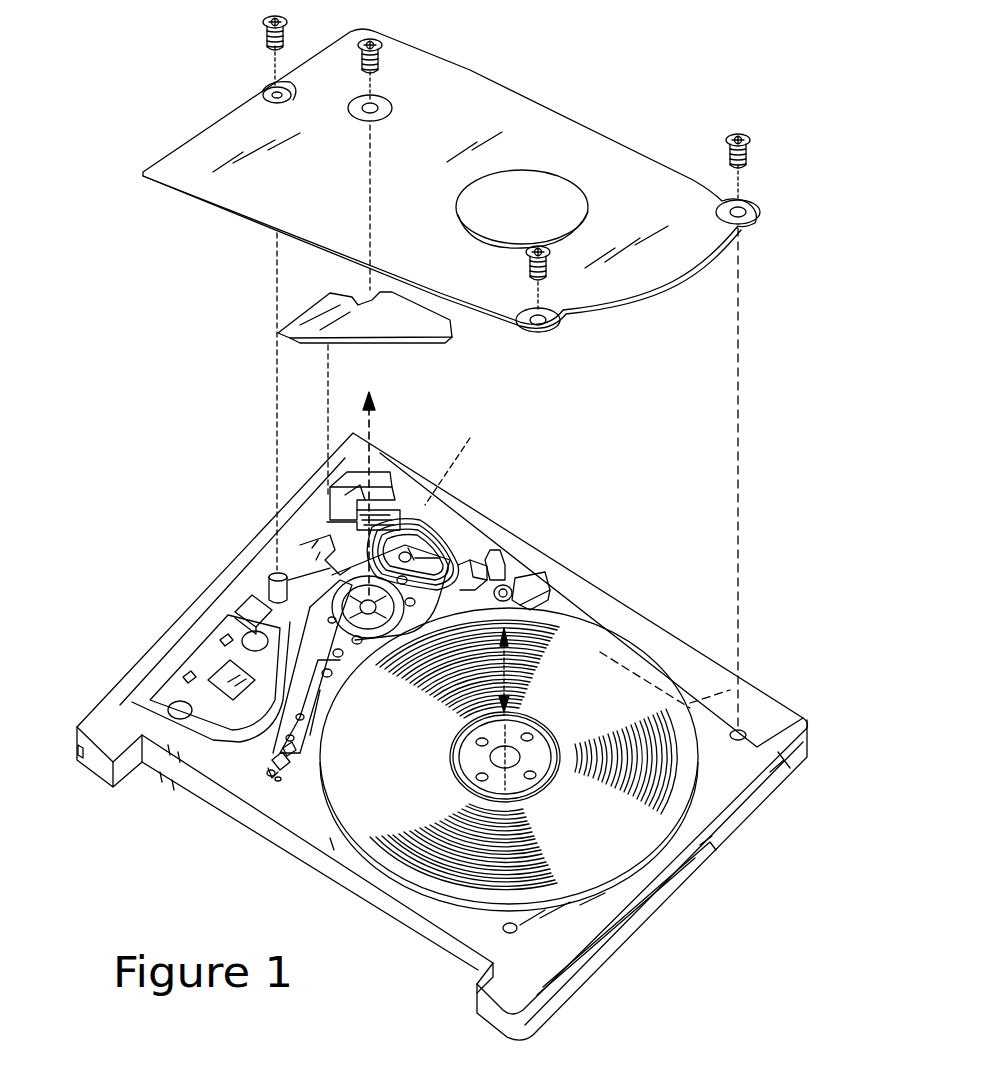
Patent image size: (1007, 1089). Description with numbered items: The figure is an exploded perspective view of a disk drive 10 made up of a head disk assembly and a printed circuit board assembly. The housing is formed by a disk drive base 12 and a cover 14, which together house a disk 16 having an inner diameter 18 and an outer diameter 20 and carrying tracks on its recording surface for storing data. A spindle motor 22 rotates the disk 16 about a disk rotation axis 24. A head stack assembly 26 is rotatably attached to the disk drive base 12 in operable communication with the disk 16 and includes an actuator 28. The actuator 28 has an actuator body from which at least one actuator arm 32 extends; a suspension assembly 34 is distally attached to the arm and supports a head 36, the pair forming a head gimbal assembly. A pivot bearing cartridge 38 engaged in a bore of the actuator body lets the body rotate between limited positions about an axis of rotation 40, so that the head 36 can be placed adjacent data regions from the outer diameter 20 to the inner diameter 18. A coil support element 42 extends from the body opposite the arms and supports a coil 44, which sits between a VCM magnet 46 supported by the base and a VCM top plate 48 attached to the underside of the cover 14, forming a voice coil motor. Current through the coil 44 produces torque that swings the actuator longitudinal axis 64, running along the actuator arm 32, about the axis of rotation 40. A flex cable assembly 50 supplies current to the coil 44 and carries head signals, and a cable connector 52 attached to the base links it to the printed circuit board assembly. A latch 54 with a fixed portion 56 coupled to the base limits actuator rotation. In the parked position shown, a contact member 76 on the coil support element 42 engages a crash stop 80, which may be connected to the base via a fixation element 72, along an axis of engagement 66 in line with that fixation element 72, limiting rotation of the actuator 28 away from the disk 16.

The disk drive 10 is at (128, 103).
The disk drive base 12 is at (167, 647).
The cover 14 is at (384, 191).
The disk 16 is at (426, 764).
The inner diameter 18 is at (545, 793).
The outer diameter 20 is at (603, 872).
The spindle motor 22 is at (535, 745).
The disk rotation axis 24 is at (514, 683).
The head stack assembly 26 is at (293, 567).
The actuator 28 is at (347, 522).
The actuator arm 32 is at (340, 683).
The suspension assembly 34 is at (300, 743).
The head 36 is at (267, 773).
The pivot bearing cartridge 38 is at (267, 583).
The axis of rotation 40 is at (372, 418).
The coil support element 42 is at (463, 560).
The coil 44 is at (435, 530).
The VCM magnet 46 is at (308, 547).
The VCM top plate 48 is at (440, 340).
The flex cable assembly 50 is at (250, 610).
The cable connector 52 is at (170, 693).
The latch 54 is at (345, 505).
The fixed portion 56 is at (350, 498).
The actuator longitudinal axis 64 is at (468, 449).
The axis of engagement 66 is at (767, 740).
The fixation element 72 is at (543, 587).
The contact member 76 is at (490, 567).
The crash stop 80 is at (508, 588).